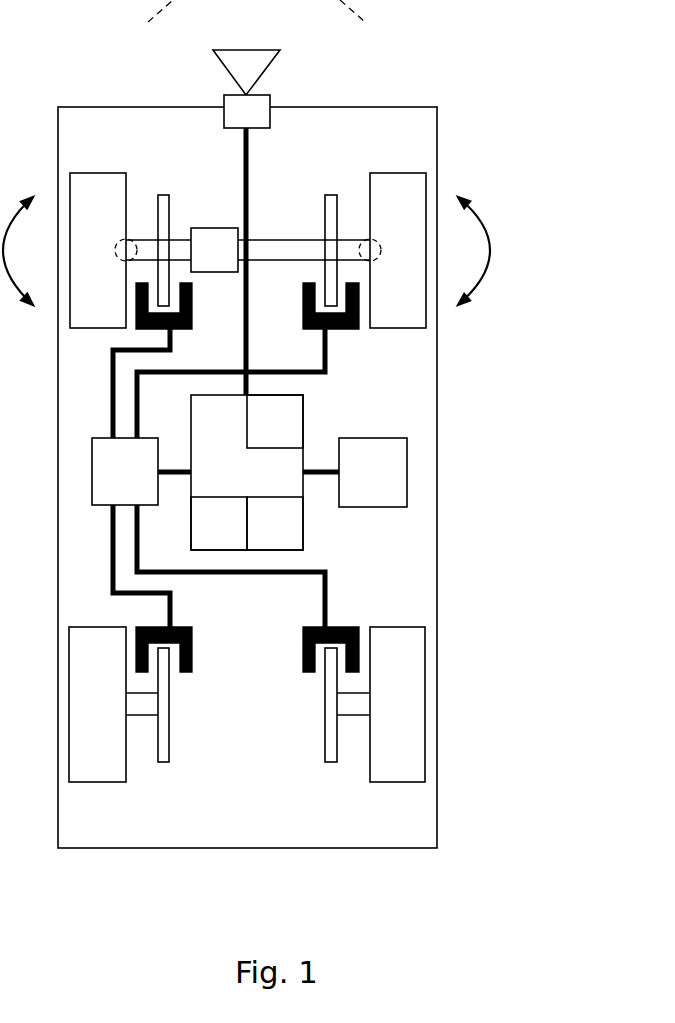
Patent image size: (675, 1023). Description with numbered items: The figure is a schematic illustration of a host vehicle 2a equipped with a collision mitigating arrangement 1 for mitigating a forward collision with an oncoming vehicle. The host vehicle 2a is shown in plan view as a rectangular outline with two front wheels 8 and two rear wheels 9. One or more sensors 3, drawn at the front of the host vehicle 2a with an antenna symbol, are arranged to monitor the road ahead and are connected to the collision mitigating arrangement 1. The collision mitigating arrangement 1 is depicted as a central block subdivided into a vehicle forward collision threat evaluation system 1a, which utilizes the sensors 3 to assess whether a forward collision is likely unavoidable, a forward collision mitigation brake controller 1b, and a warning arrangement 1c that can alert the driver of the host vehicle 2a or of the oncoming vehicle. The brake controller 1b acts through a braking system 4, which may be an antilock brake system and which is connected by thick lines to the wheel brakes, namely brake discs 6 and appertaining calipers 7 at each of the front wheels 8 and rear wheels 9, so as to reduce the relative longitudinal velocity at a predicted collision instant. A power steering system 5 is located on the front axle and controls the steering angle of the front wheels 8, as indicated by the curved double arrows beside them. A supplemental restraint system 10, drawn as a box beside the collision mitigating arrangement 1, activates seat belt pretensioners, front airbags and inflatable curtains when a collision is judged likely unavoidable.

The collision mitigating arrangement 1 is at (239, 475).
The vehicle forward collision threat evaluation system 1a is at (219, 523).
The forward collision mitigation brake controller 1b is at (275, 523).
The warning arrangement 1c is at (275, 421).
The host vehicle 2a is at (444, 456).
The sensors 3 is at (258, 105).
The braking system 4 is at (117, 488).
The power steering system 5 is at (206, 264).
The brake discs 6 is at (165, 207).
The calipers 7 is at (193, 320).
The front wheels 8 is at (83, 266).
The rear wheels 9 is at (83, 723).
The supplemental restraint system 10 is at (373, 472).